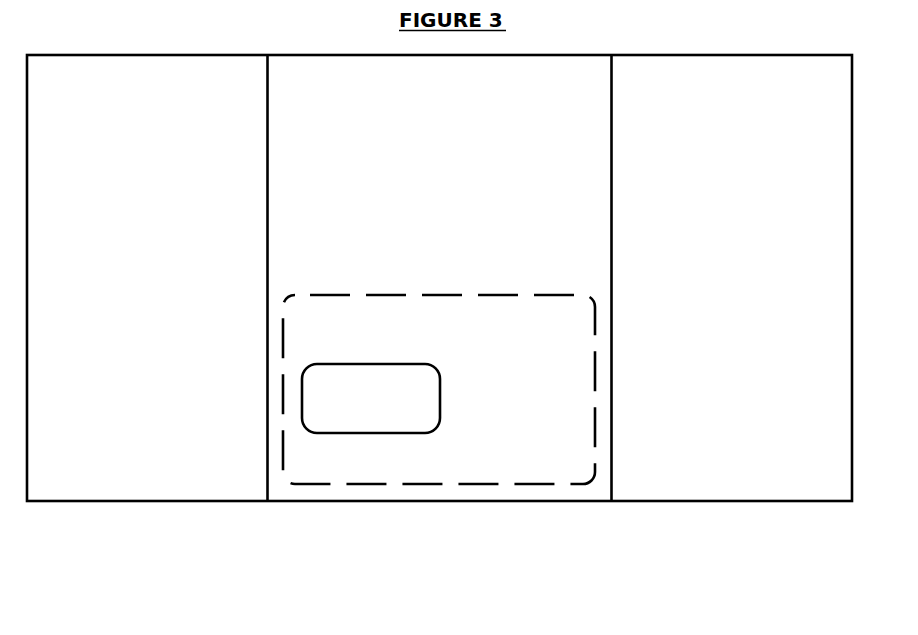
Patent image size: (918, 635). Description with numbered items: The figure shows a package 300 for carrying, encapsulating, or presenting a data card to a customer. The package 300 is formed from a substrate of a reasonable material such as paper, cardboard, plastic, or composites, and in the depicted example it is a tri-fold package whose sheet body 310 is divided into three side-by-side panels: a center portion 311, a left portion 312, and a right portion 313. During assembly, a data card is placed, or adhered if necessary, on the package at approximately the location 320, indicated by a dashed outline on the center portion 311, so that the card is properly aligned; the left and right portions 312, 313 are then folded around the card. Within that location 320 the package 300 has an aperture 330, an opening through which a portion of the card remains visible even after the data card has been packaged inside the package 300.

The package 300 is at (439, 327).
The substrate / card body 310 is at (402, 327).
The center portion 311 is at (327, 100).
The left portion 312 is at (86, 100).
The right portion 313 is at (667, 100).
The card location 320 is at (443, 447).
The aperture 330 is at (398, 482).